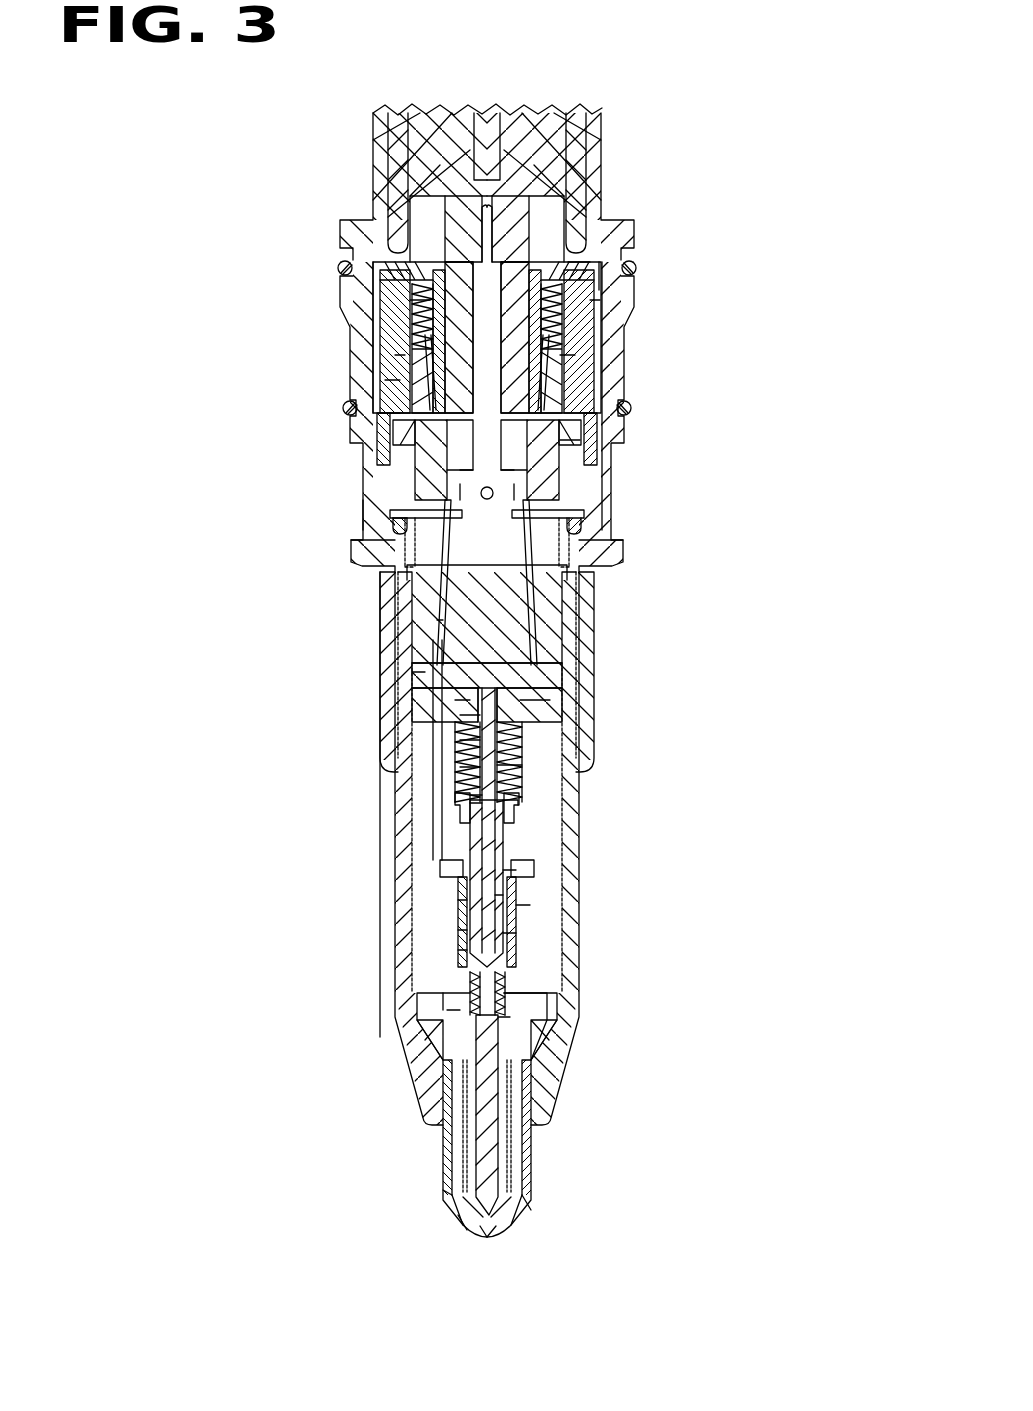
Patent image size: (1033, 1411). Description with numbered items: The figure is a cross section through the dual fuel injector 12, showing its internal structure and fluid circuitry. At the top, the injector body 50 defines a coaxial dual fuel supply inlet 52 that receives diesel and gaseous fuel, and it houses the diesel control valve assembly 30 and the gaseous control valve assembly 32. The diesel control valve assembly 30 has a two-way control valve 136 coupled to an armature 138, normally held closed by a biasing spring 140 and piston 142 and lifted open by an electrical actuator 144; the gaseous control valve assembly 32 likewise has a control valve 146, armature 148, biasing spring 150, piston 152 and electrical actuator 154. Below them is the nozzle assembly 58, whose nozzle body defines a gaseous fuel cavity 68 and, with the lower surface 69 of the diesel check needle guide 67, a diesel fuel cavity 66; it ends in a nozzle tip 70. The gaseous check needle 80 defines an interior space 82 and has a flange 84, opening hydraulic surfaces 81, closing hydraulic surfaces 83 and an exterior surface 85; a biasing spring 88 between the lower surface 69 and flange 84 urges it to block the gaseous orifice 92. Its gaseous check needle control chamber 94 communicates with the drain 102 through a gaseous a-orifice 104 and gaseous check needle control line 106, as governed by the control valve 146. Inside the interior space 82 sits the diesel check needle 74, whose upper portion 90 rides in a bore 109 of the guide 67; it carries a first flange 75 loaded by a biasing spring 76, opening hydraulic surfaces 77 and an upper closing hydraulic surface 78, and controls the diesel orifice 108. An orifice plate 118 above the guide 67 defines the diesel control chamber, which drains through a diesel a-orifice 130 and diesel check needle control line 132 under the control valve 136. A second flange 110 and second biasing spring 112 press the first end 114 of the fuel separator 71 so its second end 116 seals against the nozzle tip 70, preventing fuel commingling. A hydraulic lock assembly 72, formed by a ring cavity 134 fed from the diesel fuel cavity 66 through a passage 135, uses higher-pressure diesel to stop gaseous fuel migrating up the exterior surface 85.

The injector 12 is at (778, 104).
The diesel control valve assembly 30 is at (757, 530).
The gaseous control valve assembly 32 is at (240, 262).
The injector body 50 is at (372, 525).
The dual fuel supply inlet 52 is at (500, 493).
The nozzle assembly 58 is at (217, 1230).
The diesel fuel cavity 66 is at (518, 757).
The diesel check needle guide 67 is at (547, 717).
The gaseous fuel cavity 68 is at (527, 1012).
The lower surface 69 is at (473, 715).
The nozzle tip 70 is at (523, 1197).
The fuel separator 71 is at (500, 1110).
The hydraulic lock assembly 72 is at (510, 933).
The diesel check needle 74 is at (487, 843).
The first flange 75 is at (477, 767).
The biasing spring 76 is at (473, 740).
The opening hydraulic surfaces 77 is at (477, 803).
The closing hydraulic surface 78 is at (503, 684).
The gaseous check needle 80 is at (463, 907).
The opening hydraulic surfaces 81 is at (453, 1010).
The interior space 82 is at (498, 897).
The closing hydraulic surfaces 83 is at (515, 803).
The flange 84 is at (480, 800).
The exterior surface 85 is at (517, 910).
The biasing spring 88 is at (512, 768).
The upper portion 90 is at (490, 700).
The gaseous orifice 92 is at (463, 1207).
The gaseous check needle control chamber 94 is at (508, 875).
The drain 102 is at (388, 555).
The gaseous a-orifice 104 is at (460, 870).
The gaseous check needle control line 106 is at (440, 627).
The diesel orifice 108 is at (497, 1227).
The bore 109 is at (470, 700).
The second flange 110 is at (447, 990).
The second biasing spring 112 is at (517, 985).
The first end 114 is at (498, 1017).
The second end 116 is at (473, 1180).
The orifice plate 118 is at (415, 675).
The diesel a-orifice 130 is at (490, 672).
The diesel check needle control line 132 is at (508, 588).
The ring cavity 134 is at (463, 933).
The passage 135 is at (463, 950).
The control valve 136 is at (575, 440).
The armature 138 is at (570, 357).
The biasing spring 140 is at (578, 270).
The piston 142 is at (610, 300).
The electrical actuator 144 is at (620, 335).
The control valve 146 is at (420, 477).
The armature 148 is at (402, 423).
The biasing spring 150 is at (418, 300).
The piston 152 is at (400, 382).
The electrical actuator 154 is at (402, 358).